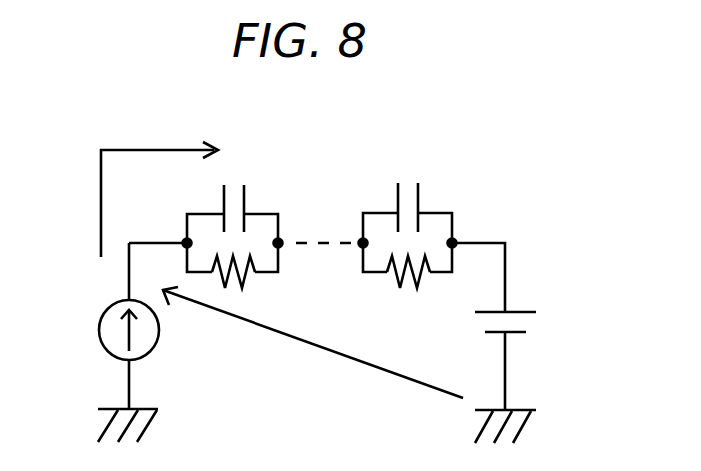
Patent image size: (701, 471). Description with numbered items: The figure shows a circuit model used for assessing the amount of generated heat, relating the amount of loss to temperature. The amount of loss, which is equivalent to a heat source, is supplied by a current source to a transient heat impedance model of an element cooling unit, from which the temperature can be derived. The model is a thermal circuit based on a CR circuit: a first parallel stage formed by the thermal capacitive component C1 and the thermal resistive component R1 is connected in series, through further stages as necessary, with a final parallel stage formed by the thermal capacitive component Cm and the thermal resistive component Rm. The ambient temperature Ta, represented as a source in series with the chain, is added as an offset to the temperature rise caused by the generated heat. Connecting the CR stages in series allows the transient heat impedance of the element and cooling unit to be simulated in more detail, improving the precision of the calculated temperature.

The thermal capacitive component C1 is at (243, 195).
The thermal resistive component R1 is at (248, 282).
The thermal capacitive component Cm is at (414, 195).
The thermal resistive component Rm is at (410, 288).
The ambient temperature Ta is at (506, 307).